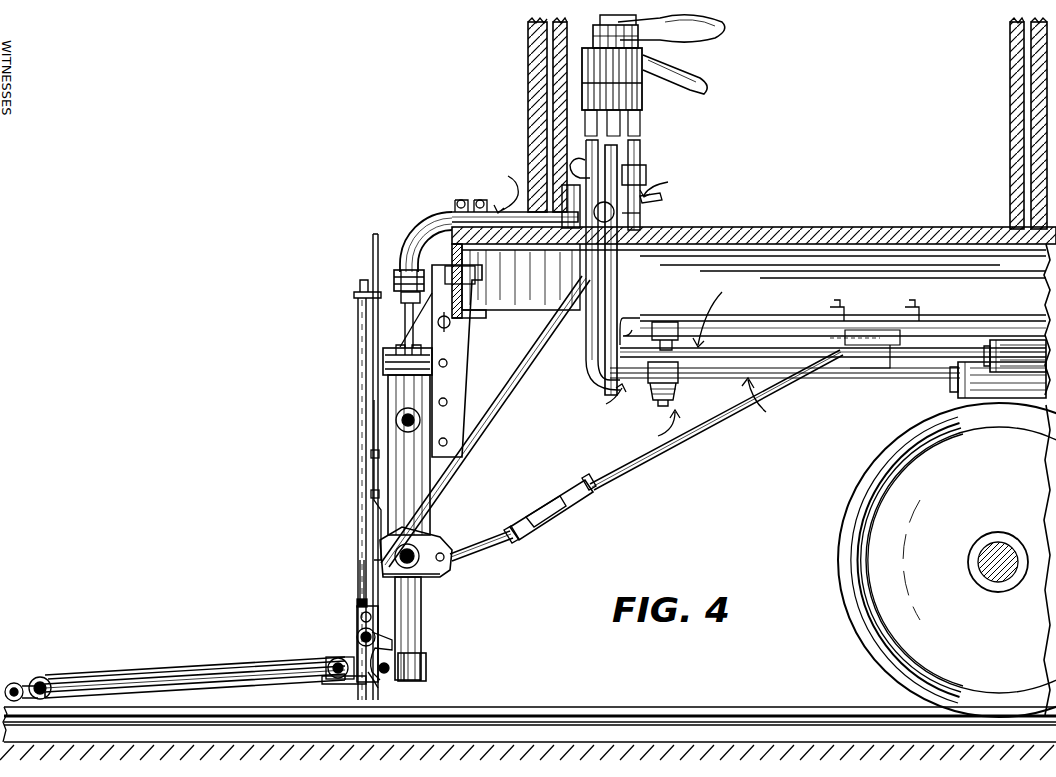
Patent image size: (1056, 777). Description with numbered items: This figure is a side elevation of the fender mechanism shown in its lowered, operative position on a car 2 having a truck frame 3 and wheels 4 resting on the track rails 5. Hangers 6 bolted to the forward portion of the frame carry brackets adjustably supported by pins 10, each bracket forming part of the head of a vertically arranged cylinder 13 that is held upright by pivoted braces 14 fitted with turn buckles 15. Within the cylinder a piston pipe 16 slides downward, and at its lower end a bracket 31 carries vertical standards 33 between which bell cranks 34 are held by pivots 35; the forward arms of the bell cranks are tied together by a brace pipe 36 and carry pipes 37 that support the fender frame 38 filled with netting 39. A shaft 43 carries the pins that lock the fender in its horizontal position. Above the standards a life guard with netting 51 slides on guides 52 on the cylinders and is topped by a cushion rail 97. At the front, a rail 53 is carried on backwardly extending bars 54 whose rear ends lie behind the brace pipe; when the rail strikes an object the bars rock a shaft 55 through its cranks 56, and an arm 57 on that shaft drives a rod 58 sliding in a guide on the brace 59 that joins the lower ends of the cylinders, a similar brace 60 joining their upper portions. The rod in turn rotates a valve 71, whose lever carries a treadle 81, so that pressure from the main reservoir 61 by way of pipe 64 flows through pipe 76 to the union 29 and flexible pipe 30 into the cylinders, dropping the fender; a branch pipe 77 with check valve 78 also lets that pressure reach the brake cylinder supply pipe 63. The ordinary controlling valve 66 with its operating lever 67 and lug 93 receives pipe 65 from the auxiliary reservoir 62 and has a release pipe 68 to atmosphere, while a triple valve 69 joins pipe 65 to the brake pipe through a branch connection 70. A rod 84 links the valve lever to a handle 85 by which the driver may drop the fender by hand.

The car 2 is at (527, 84).
The truck frame 3 is at (888, 265).
The wheels 4 is at (855, 648).
The track rails 5 is at (562, 706).
The hangers 6 is at (466, 357).
The pins 10 is at (448, 327).
The cylinder 13 is at (388, 478).
The pivoted braces 14 is at (670, 452).
The turn buckles 15 is at (552, 522).
The pipe 16 is at (422, 616).
The union 29 is at (404, 300).
The flexible fluid pressure pipe 30 is at (448, 222).
The brackets 31 is at (428, 664).
The vertical standards 33 is at (390, 590).
The bell cranks 34 is at (366, 684).
The pivots 35 is at (360, 620).
The brace pipe 36 is at (320, 660).
The pipes 37 is at (205, 685).
The fender frame 38 is at (50, 680).
The netting 39 is at (128, 670).
The shaft 43 is at (390, 670).
The netting 51 is at (358, 342).
The guides 52 is at (373, 247).
The rail 53 is at (16, 682).
The bars 54 is at (272, 680).
The shaft 55 is at (356, 636).
The cranks 56 is at (372, 678).
The arm 57 is at (392, 643).
The rod 58 is at (470, 444).
The brace 59 is at (395, 548).
The brace 60 is at (398, 418).
The main fluid pressure reservoir 61 is at (1015, 356).
The auxiliary reservoir 62 is at (998, 380).
The fluid pressure supply pipe 63 is at (640, 130).
The pipe 64 is at (880, 365).
The pipe 65 is at (586, 115).
The valve 66 is at (640, 90).
The operating lever 67 is at (712, 32).
The release pipe 68 is at (606, 388).
The triple valve 69 is at (680, 386).
The branch connection 70 is at (680, 320).
The valve 71 is at (640, 216).
The pipe 76 is at (498, 212).
The branch pipe 77 is at (588, 185).
The check valve 78 is at (598, 172).
The treadle 81 is at (660, 197).
The rod 84 is at (632, 160).
The handle 85 is at (704, 76).
The lug 93 is at (650, 40).
The cushion rail 97 is at (360, 288).